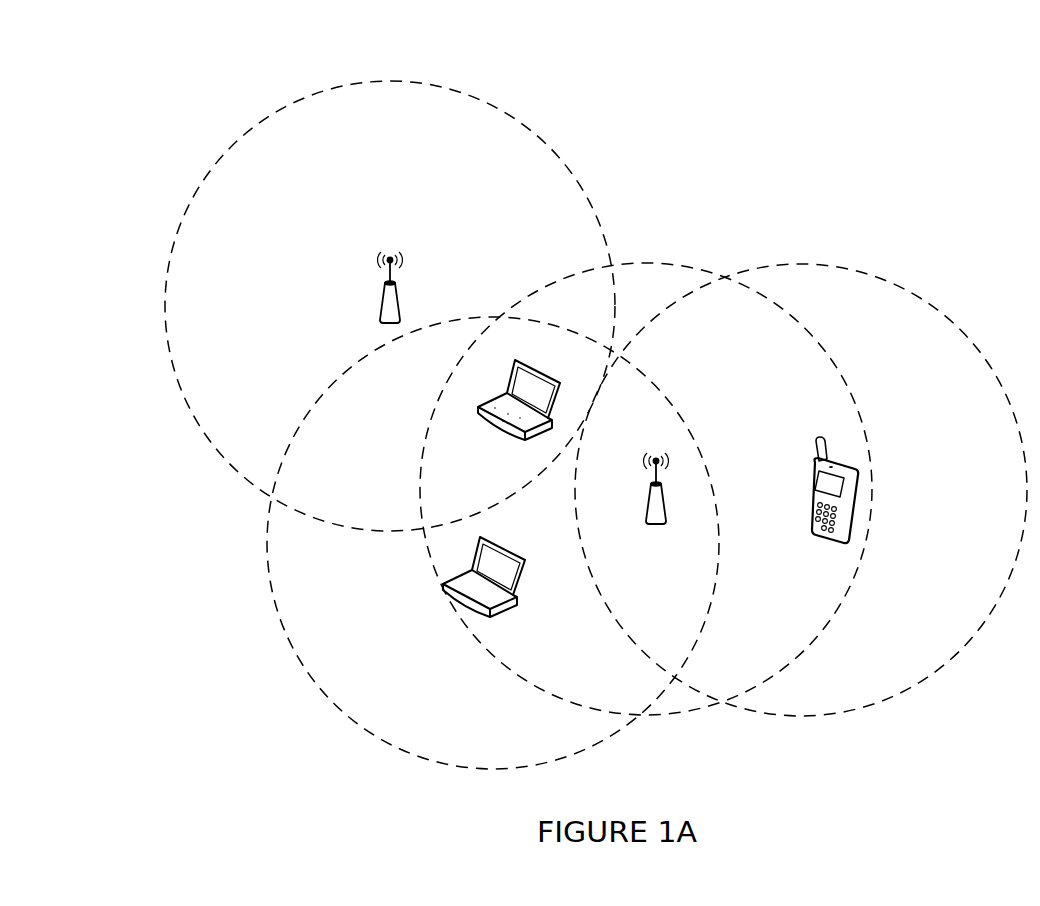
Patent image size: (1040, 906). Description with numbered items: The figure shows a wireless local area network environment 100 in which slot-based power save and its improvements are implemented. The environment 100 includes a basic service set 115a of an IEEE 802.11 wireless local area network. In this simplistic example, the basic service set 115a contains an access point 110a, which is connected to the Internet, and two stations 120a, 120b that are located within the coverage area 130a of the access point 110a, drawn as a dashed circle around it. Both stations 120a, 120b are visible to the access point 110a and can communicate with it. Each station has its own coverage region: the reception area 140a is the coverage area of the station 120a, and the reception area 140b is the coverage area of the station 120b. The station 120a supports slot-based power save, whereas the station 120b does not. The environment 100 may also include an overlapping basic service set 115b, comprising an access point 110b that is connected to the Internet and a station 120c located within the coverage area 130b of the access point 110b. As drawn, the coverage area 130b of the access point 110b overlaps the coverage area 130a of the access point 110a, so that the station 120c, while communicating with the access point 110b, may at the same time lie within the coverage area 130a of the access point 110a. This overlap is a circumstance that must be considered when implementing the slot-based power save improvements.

The WLAN environment 100 is at (789, 207).
The access point 110a is at (654, 527).
The access point 110b is at (388, 325).
The basic service set 115a is at (667, 423).
The overlapping basic service set 115b is at (420, 218).
The station 120a is at (505, 548).
The station 120b is at (842, 459).
The station 120c is at (538, 372).
The coverage area 130a is at (646, 512).
The coverage area 130b is at (393, 80).
The reception area 140a is at (493, 566).
The reception area 140b is at (801, 517).